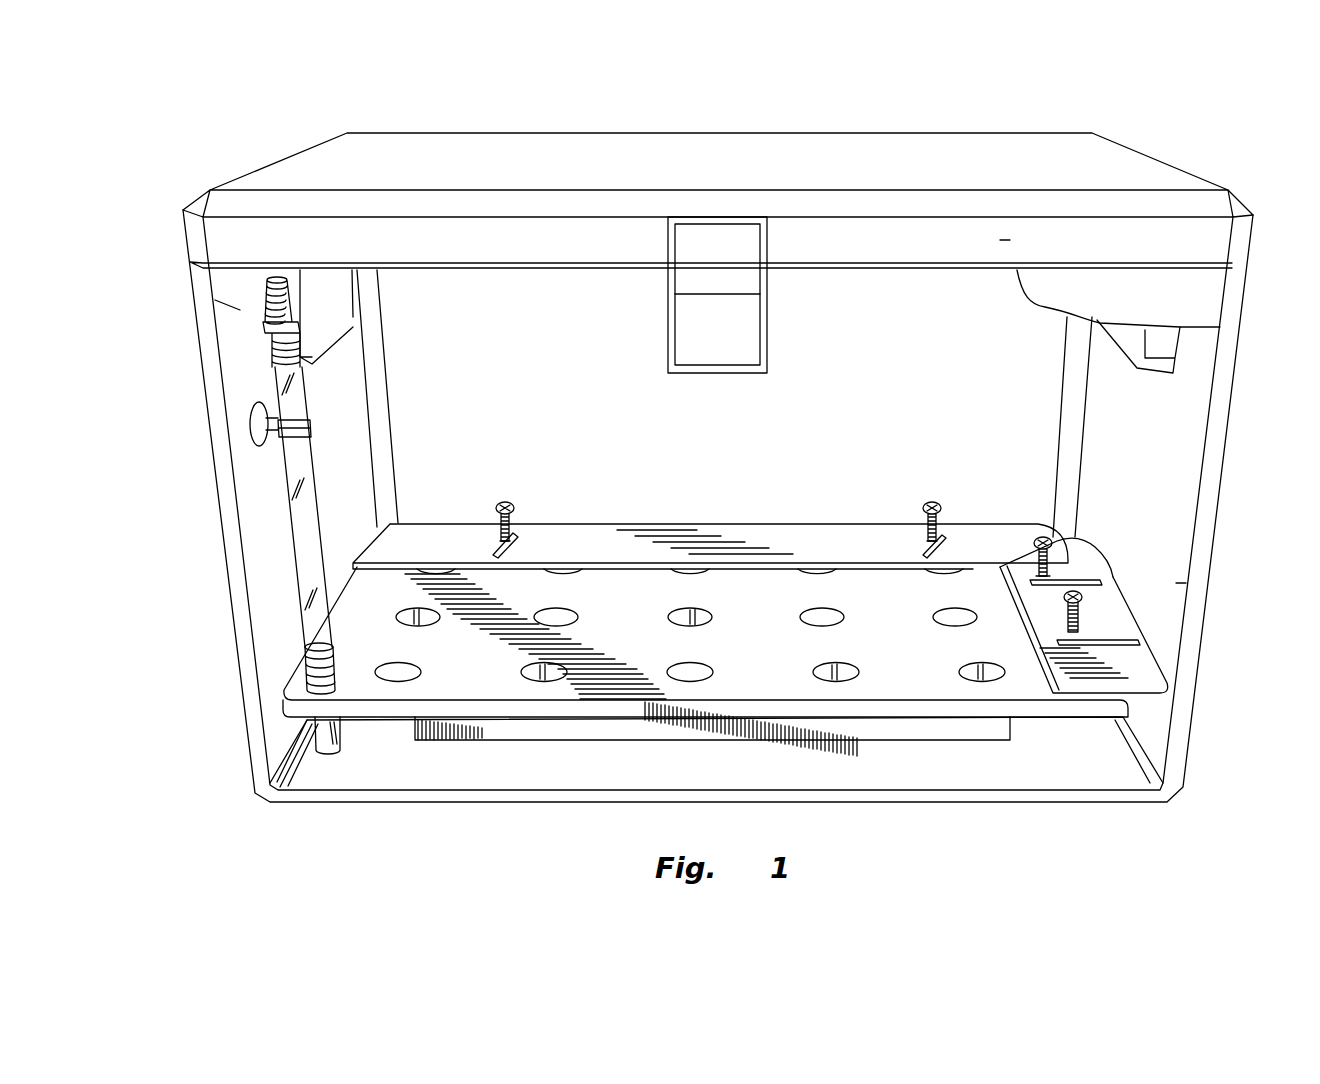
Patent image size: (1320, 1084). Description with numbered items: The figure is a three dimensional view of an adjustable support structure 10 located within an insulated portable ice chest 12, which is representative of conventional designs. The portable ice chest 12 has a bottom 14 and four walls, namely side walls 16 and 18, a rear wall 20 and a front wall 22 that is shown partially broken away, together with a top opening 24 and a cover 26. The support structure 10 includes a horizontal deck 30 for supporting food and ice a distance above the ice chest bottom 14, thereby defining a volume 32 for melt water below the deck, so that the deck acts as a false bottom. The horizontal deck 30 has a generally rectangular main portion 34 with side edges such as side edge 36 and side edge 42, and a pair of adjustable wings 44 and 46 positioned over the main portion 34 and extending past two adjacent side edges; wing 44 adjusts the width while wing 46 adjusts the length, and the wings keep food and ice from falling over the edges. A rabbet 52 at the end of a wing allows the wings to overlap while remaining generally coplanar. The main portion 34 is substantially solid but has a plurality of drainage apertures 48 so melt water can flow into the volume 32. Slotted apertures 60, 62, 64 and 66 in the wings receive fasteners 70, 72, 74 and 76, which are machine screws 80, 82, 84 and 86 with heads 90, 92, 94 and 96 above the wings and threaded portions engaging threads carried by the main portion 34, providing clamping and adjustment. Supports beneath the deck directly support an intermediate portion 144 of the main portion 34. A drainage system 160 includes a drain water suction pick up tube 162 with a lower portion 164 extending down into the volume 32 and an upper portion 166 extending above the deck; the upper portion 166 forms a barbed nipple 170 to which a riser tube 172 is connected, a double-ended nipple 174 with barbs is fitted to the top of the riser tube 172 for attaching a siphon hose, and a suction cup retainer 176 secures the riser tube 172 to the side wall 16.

The adjustable support structure 10 is at (800, 465).
The portable ice chest 12 is at (1255, 222).
The bottom 14 is at (1092, 777).
The side wall 16 is at (232, 305).
The side wall 18 is at (1177, 583).
The rear wall 20 is at (596, 354).
The front wall 22 is at (1193, 297).
The top opening 24 is at (985, 292).
The cover 26 is at (1072, 242).
The horizontal deck 30 is at (700, 495).
The volume for melt water 32 is at (512, 771).
The main portion 34 is at (482, 617).
The side edge 36 is at (340, 590).
The side edge 42 is at (623, 708).
The adjustable wing 44 is at (865, 540).
The adjustable wing 46 is at (1123, 668).
The drainage apertures 48 is at (820, 625).
The rabbet 52 is at (1080, 555).
The slotted aperture 60 is at (537, 550).
The slotted aperture 62 is at (940, 548).
The slotted aperture 64 is at (1047, 587).
The slotted aperture 66 is at (1087, 647).
The fastener 70 is at (540, 452).
The fastener 72 is at (928, 454).
The fastener 74 is at (1083, 446).
The fastener 76 is at (1143, 659).
The machine screw 80 is at (522, 520).
The machine screw 82 is at (914, 523).
The machine screw 84 is at (1030, 552).
The machine screw 86 is at (1090, 617).
The head 90 is at (497, 507).
The head 92 is at (925, 503).
The head 94 is at (1040, 537).
The head 96 is at (1082, 598).
The intermediate portion 144 is at (760, 600).
The drainage system 160 is at (415, 362).
The drain water suction pick up tube 162 is at (325, 775).
The lower portion 164 is at (347, 735).
The upper portion 166 is at (332, 650).
The nipple 170 is at (308, 665).
The riser tube 172 is at (300, 458).
The double-ended nipple 174 is at (258, 335).
The suction cup retainer 176 is at (263, 427).